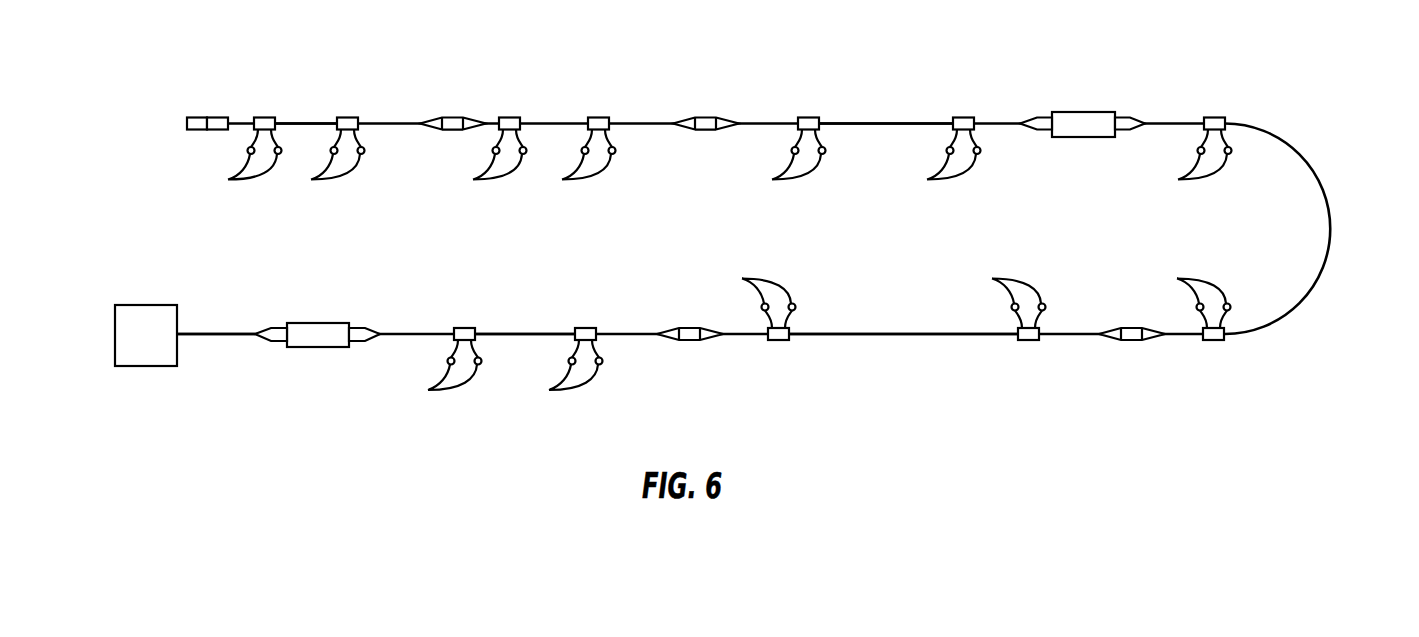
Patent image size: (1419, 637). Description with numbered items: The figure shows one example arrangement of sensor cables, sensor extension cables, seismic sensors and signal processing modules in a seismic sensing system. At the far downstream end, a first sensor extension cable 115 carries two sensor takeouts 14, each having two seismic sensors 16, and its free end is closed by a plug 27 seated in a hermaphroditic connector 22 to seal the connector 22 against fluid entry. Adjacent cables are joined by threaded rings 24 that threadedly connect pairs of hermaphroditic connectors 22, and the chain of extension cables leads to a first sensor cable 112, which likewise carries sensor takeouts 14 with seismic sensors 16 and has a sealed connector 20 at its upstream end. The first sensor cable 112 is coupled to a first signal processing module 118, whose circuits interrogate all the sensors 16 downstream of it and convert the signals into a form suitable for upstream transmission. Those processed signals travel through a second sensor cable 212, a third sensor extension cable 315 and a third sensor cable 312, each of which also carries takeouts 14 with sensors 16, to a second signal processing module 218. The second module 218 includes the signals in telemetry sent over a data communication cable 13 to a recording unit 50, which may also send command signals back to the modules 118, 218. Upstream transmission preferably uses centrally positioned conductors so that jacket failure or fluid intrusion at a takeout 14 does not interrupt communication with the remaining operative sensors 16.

The data communication cable 13 is at (242, 337).
The sensor takeout 14 is at (505, 118).
The seismic sensor 16 is at (710, 280).
The sealed connector 20 is at (1033, 118).
The hermaphroditic connector 22 is at (216, 117).
The threaded ring 24 is at (448, 118).
The plug 27 is at (198, 131).
The recording unit 50 is at (147, 304).
The first sensor cable 112 is at (890, 122).
The first sensor extension cable 115 is at (292, 122).
The first signal processing module 118 is at (1105, 111).
The second sensor cable 212 is at (1331, 228).
The second signal processing module 218 is at (338, 322).
The third sensor cable 312 is at (518, 333).
The third sensor extension cable 315 is at (913, 336).